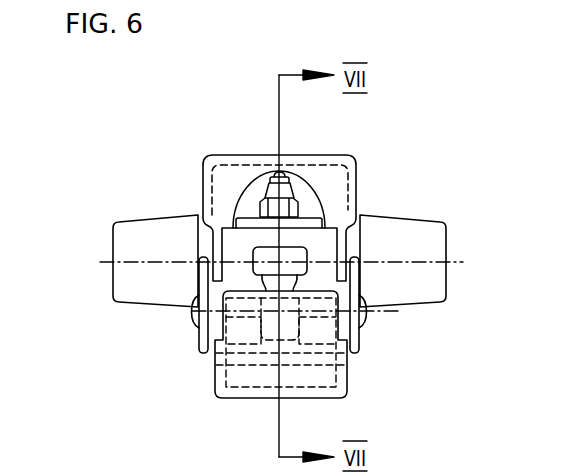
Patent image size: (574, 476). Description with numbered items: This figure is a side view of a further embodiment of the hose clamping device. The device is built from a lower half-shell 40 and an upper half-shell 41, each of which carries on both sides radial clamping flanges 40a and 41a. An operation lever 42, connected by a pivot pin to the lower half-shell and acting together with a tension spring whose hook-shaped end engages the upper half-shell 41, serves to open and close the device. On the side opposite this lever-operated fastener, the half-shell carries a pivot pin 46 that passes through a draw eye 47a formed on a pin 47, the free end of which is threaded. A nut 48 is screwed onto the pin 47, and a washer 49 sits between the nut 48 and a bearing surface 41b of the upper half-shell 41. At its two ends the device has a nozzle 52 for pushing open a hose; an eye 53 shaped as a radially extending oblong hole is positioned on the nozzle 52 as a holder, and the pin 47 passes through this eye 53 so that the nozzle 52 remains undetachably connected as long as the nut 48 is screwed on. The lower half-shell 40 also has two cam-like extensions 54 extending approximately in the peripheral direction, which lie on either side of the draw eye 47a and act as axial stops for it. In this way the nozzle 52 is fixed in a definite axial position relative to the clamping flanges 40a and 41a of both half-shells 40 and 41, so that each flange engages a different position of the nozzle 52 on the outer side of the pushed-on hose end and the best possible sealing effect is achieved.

The lower half-shell 40 is at (203, 353).
The clamping flange 40a is at (204, 274).
The upper half-shell 41 is at (238, 162).
The clamping flange 41a is at (209, 186).
The bearing surface 41b is at (318, 223).
The operation lever 42 is at (224, 393).
The pivot pin 46 is at (358, 311).
The pin 47 is at (357, 224).
The draw eye 47a is at (284, 313).
The nut 48 is at (272, 205).
The washer 49 is at (302, 208).
The nozzle 52 is at (143, 243).
The eye 53 is at (272, 255).
The cam-like extensions 54 is at (242, 327).